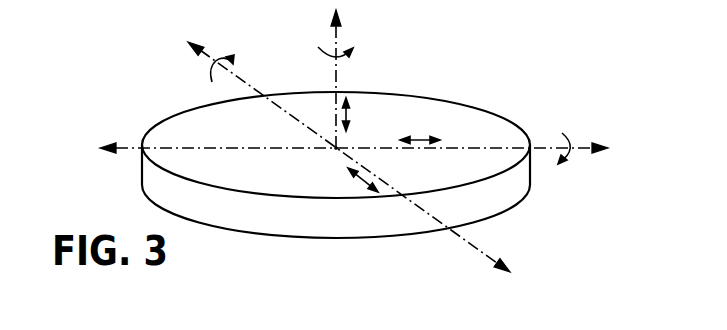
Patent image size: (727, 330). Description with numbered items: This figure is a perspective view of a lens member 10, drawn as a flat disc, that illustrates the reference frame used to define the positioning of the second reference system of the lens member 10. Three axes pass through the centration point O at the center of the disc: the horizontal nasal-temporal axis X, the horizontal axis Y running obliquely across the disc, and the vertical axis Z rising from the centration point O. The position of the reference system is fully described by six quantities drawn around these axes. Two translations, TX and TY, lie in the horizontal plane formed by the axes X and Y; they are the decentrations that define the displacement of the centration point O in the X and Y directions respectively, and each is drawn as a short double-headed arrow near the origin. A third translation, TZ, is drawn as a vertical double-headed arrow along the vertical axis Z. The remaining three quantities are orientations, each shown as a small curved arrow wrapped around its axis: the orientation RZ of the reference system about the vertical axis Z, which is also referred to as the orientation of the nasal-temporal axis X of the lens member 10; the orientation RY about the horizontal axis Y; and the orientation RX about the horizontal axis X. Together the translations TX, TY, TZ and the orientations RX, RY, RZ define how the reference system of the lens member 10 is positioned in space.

The lens member 10 is at (478, 108).
The X axis X is at (362, 148).
The Y axis Y is at (340, 147).
The Z axis Z is at (329, 74).
The centration point O is at (322, 163).
The orientation about the horizontal X axis RX is at (562, 163).
The orientation about the horizontal Y axis RY is at (232, 53).
The orientation about the vertical Z axis RZ is at (352, 41).
The translation TX is at (420, 126).
The translation TY is at (347, 184).
The translation TZ is at (363, 114).